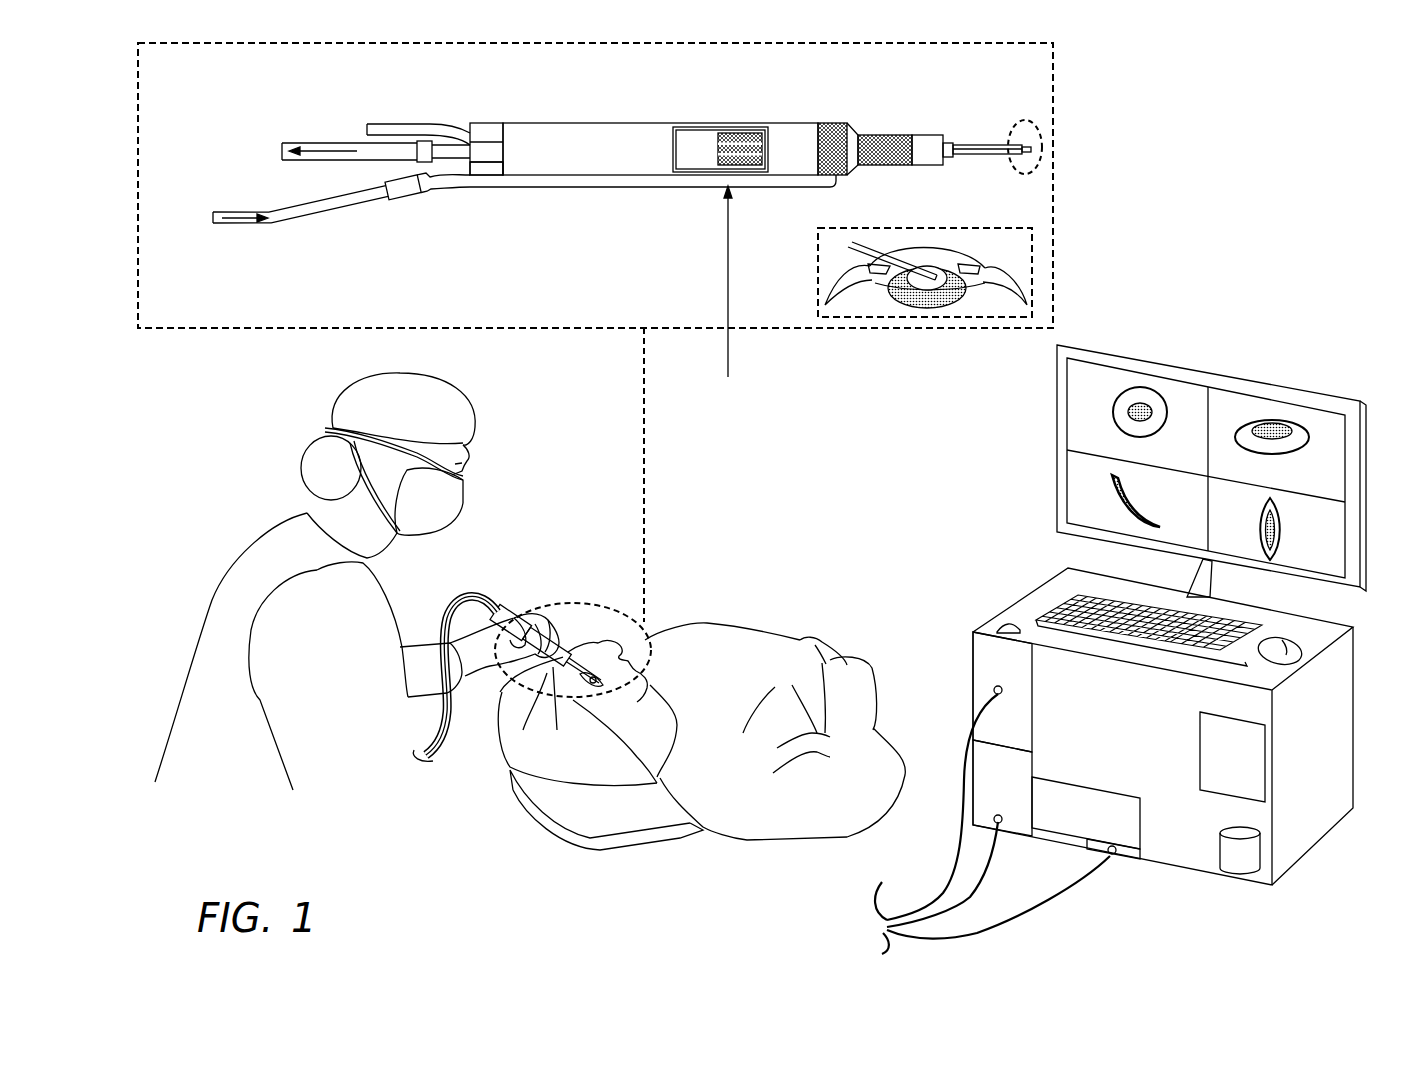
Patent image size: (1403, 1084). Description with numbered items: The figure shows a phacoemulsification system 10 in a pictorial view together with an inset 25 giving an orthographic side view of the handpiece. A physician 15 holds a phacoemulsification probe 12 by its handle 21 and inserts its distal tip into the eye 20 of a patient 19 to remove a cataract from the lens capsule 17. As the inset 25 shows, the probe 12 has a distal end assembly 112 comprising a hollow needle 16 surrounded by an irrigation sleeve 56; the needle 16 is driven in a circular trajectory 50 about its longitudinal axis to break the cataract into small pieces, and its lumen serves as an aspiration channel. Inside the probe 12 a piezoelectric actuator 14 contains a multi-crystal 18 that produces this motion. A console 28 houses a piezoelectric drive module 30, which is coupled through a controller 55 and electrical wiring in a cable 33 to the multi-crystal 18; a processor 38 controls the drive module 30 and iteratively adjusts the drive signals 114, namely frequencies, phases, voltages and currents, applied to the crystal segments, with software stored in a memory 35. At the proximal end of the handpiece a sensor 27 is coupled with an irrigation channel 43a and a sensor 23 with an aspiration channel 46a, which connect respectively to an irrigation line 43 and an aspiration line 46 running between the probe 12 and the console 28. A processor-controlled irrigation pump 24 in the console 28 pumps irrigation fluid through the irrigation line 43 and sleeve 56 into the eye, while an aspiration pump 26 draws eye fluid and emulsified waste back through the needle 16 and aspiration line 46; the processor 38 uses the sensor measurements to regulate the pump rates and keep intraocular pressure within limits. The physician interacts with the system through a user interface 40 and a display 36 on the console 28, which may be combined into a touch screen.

The phacoemulsification system 10 is at (1288, 282).
The phacoemulsification probe 12 is at (633, 161).
The piezoelectric actuator 14 is at (705, 161).
The physician 15 is at (333, 401).
The needle 16 is at (1041, 152).
The lens capsule 17 is at (897, 296).
The multi-crystal 18 is at (760, 204).
The patient 19 is at (590, 772).
The eye 20 is at (1017, 275).
The handle 21 is at (522, 610).
The sensor 23 is at (493, 148).
The irrigation pump 24 is at (1010, 674).
The inset 25 is at (173, 326).
The aspiration pump 26 is at (1010, 786).
The sensor 27 is at (492, 171).
The console 28 is at (1315, 835).
The piezoelectric drive module 30 is at (1100, 834).
The cable 33 is at (399, 123).
The memory 35 is at (1238, 875).
The display 36 is at (1057, 462).
The processor 38 is at (1245, 771).
The user interface 40 is at (1015, 585).
The irrigation line 43 is at (337, 215).
The irrigation channel 43a is at (450, 193).
The aspiration line 46 is at (322, 143).
The aspiration channel 46a is at (457, 143).
The circular trajectory 50 is at (1027, 120).
The controller 55 is at (1136, 859).
The irrigation sleeve 56 is at (985, 143).
The distal end assembly 112 is at (997, 184).
The drive signals 114 is at (841, 442).